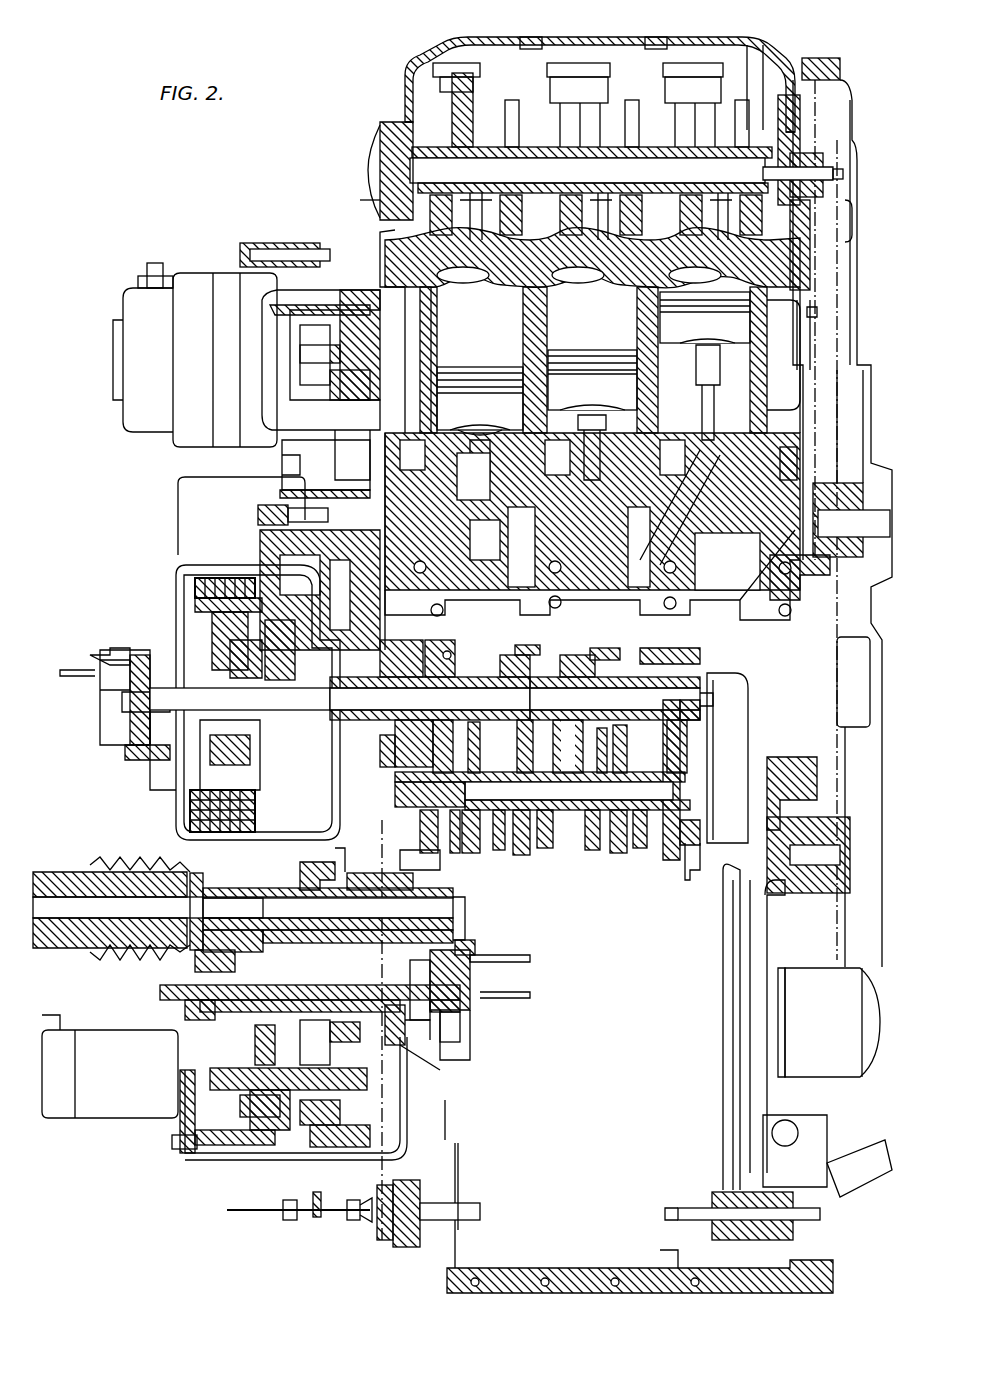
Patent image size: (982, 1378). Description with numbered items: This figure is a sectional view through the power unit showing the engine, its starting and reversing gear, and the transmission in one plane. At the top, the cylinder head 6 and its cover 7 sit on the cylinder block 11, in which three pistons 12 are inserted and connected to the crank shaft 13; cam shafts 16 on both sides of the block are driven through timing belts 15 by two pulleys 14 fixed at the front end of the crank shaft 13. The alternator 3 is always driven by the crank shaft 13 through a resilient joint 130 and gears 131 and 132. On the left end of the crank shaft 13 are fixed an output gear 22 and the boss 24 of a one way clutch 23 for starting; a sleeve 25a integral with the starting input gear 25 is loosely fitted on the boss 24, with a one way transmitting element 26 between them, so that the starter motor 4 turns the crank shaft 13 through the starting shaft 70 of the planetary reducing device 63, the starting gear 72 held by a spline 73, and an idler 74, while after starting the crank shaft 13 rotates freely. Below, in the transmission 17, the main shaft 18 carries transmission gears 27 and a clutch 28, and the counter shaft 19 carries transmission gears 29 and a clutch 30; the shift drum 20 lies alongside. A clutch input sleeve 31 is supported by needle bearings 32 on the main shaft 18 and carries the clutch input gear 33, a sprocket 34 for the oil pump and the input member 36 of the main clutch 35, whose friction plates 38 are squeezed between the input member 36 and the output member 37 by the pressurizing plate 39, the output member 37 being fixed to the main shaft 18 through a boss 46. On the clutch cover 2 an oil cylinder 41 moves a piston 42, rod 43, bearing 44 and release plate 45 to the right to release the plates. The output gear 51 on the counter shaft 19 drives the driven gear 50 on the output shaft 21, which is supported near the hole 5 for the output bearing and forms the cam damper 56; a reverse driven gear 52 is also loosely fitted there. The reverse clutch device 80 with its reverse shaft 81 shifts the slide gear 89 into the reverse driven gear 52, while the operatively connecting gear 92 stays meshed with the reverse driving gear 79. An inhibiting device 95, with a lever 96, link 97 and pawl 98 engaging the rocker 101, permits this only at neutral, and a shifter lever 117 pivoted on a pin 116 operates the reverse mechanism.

The clutch cover 2 is at (176, 770).
The alternator 3 is at (142, 425).
The starter motor 4 is at (108, 1112).
The hole for attaching an output bearing 5 is at (175, 948).
The cylinder head 6 is at (392, 232).
The cover 7 is at (660, 42).
The cylinder block 11 is at (768, 345).
The piston 12 is at (505, 370).
The crank shaft 13 is at (738, 455).
The pulley 14 is at (818, 578).
The timing belt 15 is at (872, 415).
The cam shaft 16 is at (825, 160).
The transmission 17 is at (585, 895).
The main shaft 18 is at (640, 672).
The counter shaft 19 is at (648, 832).
The shift drum 20 is at (520, 955).
The output shaft 21 is at (475, 908).
The output gear 22 is at (480, 438).
The one way clutch 23 is at (283, 455).
The boss 24 is at (258, 515).
The starting input gear 25 is at (290, 417).
The sleeve 25a is at (280, 494).
The one way transmitting element 26 is at (262, 550).
The transmission gears 27 is at (520, 662).
The clutch 28 is at (575, 662).
The transmission gears 29 is at (530, 830).
The clutch 30 is at (505, 835).
The clutch input sleeve 31 is at (240, 698).
The needle bearings 32 is at (360, 680).
The clutch input gear 33 is at (392, 662).
The sprocket 34 is at (405, 715).
The main clutch 35 is at (165, 635).
The input member 36 is at (200, 580).
The output member 37 is at (212, 640).
The friction plates 38 is at (195, 600).
The pressurizing plate 39 is at (232, 650).
The oil cylinder 41 is at (128, 710).
The piston 42 is at (128, 750).
The rod 43 is at (122, 698).
The bearing 44 is at (200, 755).
The release plate 45 is at (190, 800).
The boss 46 is at (330, 620).
The driven gear 50 is at (462, 870).
The output gear 51 is at (384, 1027).
The reverse driven gear 52 is at (298, 862).
The cam damper 56 is at (491, 689).
The planetary reducing device 63 is at (190, 1160).
The starting shaft 70 is at (220, 1148).
The starting gear 72 is at (340, 1075).
The spline 73 is at (340, 1110).
The idler 74 is at (440, 650).
The reverse driving gear 79 is at (270, 1135).
The reverse clutch device 80 is at (188, 1012).
The reverse shaft 81 is at (200, 972).
The slide gear 89 is at (325, 1010).
The operatively connecting gear 92 is at (491, 689).
The inhibiting device 95 is at (466, 1080).
The lever 96 is at (462, 1030).
The link 97 is at (422, 1060).
The pawl 98 is at (460, 1045).
The rocker 101 is at (470, 952).
The pin 116 is at (315, 1192).
The lever 117 is at (258, 1212).
The resilient joint 130 is at (342, 310).
The gear 131 is at (372, 335).
The gear 132 is at (436, 395).